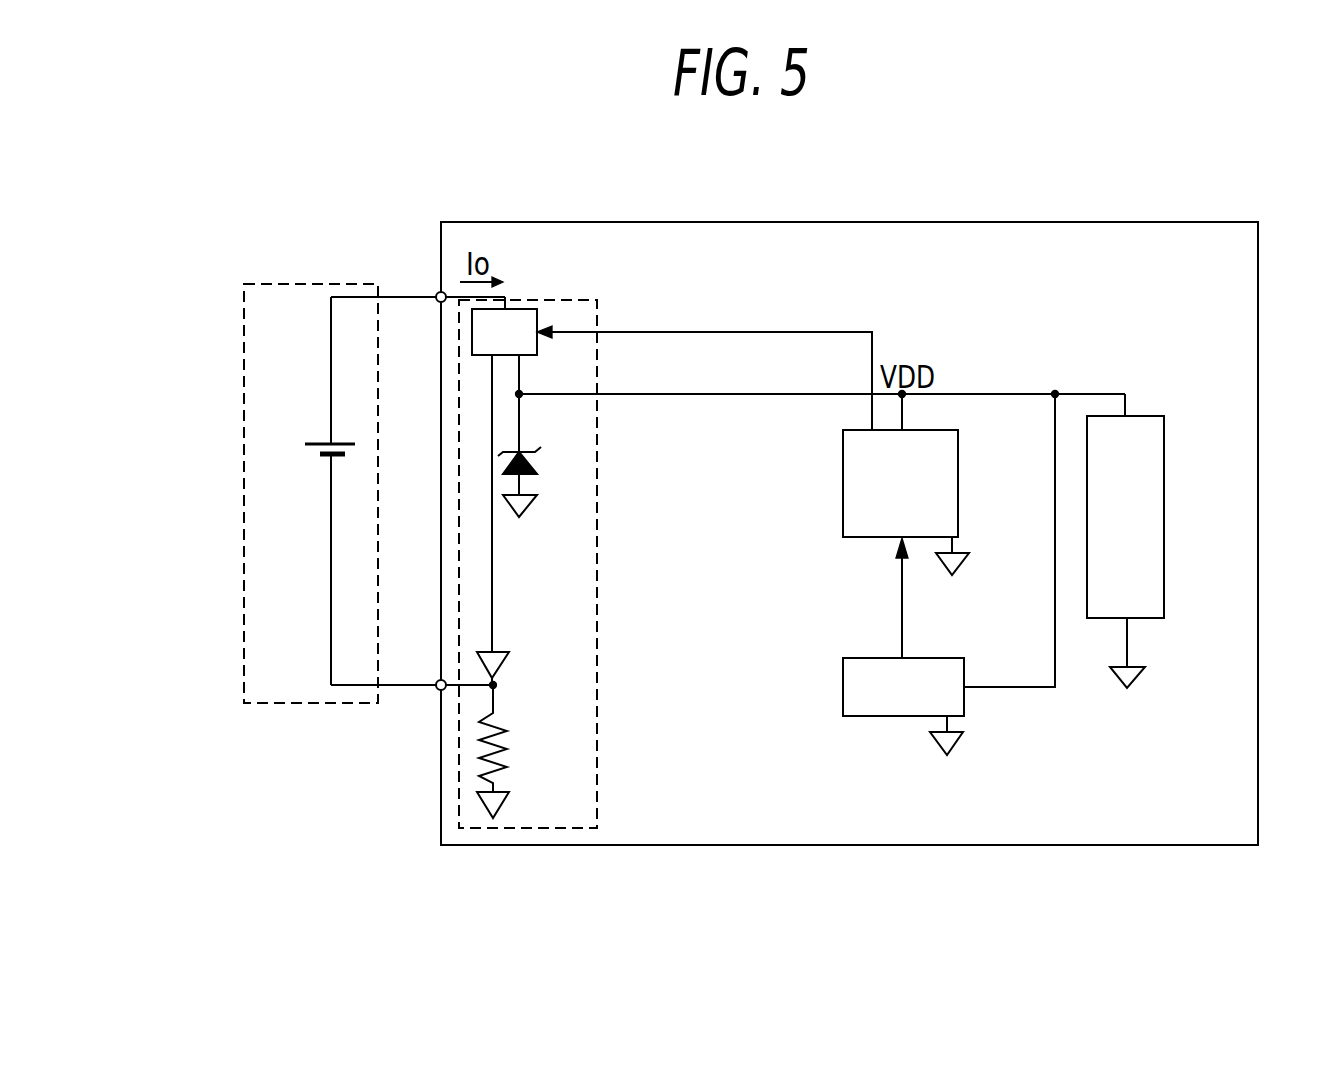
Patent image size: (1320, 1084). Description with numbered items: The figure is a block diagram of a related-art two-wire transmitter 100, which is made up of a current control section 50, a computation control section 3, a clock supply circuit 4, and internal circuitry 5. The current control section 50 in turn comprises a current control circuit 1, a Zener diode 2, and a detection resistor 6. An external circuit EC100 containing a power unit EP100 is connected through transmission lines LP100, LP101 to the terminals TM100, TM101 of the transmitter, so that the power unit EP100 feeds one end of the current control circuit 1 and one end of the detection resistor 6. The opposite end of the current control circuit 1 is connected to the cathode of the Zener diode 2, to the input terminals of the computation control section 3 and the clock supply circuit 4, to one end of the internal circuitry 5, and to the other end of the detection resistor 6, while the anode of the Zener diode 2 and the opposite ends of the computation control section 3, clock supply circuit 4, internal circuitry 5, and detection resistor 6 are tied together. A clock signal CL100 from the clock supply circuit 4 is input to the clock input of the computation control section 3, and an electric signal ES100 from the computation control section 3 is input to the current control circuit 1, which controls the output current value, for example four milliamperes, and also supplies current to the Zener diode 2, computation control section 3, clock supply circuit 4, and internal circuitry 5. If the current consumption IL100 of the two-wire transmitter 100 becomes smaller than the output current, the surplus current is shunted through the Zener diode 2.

The current control circuit 1 is at (519, 297).
The Zener diode 2 is at (530, 460).
The computation control section 3 is at (920, 430).
The clock supply circuit 4 is at (888, 716).
The internal circuitry 5 is at (1100, 618).
The detection resistor 6 is at (507, 750).
The current control section 50 is at (528, 830).
The two-wire transmitter 100 is at (1015, 845).
The terminal TM100 is at (437, 297).
The terminal TM101 is at (437, 692).
The transmission line LP100 is at (411, 297).
The transmission line LP101 is at (412, 690).
The power unit EP100 is at (310, 452).
The external circuit EC100 is at (245, 640).
The electric signal ES100 is at (847, 299).
The current consumption IL100 is at (716, 383).
The clock signal CL100 is at (902, 608).